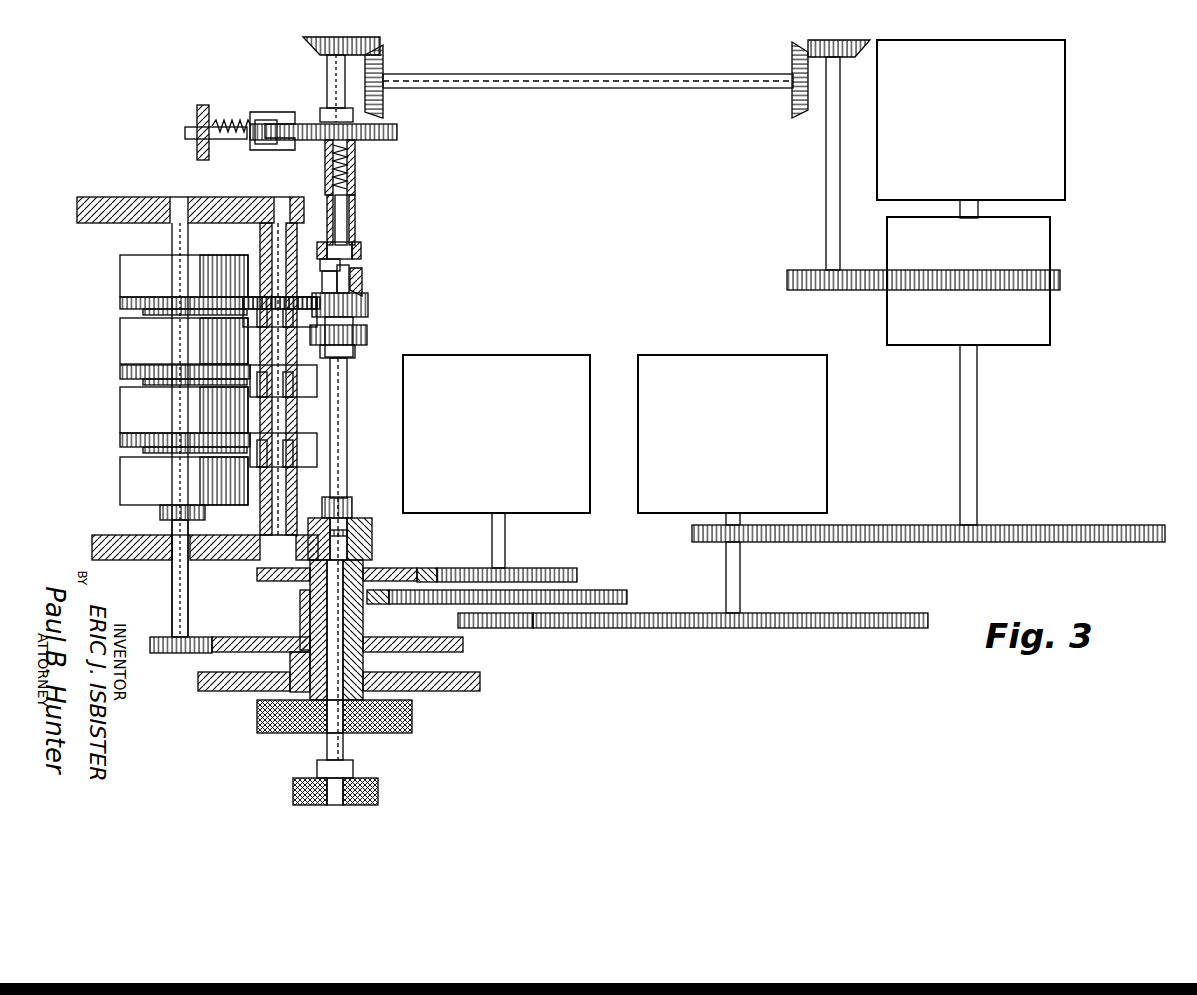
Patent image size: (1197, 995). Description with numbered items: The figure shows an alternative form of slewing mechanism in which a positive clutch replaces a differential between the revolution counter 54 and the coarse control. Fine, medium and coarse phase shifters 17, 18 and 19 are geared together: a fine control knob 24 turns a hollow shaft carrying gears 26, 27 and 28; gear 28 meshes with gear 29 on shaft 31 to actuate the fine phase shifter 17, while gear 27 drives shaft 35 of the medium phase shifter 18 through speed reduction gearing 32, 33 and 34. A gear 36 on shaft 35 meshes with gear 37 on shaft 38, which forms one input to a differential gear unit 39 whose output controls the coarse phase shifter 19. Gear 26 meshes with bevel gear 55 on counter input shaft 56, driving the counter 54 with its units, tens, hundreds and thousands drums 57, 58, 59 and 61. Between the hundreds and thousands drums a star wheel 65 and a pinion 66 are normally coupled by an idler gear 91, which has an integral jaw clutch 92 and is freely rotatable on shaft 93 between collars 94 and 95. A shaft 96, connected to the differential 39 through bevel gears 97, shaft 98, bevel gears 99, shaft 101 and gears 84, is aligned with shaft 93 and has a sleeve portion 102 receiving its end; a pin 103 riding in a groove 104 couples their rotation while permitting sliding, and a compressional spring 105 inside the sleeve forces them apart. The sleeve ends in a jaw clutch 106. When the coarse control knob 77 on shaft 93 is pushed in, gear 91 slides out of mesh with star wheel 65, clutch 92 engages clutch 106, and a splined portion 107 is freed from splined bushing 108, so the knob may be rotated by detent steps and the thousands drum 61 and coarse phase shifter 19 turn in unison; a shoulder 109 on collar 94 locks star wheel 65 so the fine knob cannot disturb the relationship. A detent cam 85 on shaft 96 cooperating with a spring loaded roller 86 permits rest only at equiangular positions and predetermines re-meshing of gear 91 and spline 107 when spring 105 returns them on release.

The fine phase shifter 17 is at (590, 468).
The medium phase shifter 18 is at (826, 468).
The coarse phase shifter 19 is at (1064, 160).
The fine control knob 24 is at (412, 722).
The gear 26 is at (262, 636).
The gear 27 is at (300, 610).
The gear 28 is at (399, 567).
The gear 29 is at (556, 568).
The shaft 31 is at (506, 542).
The speed reduction gear 32 is at (630, 590).
The speed reduction gear 33 is at (512, 628).
The speed reduction gear 34 is at (686, 628).
The shaft 35 is at (724, 578).
The gear 36 is at (746, 544).
The gear 37 is at (1140, 530).
The shaft 38 is at (978, 466).
The differential gear unit 39 is at (1050, 315).
The revolution counter 54 is at (92, 395).
The bevel gear 55 is at (155, 654).
The counter input shaft 56 is at (170, 590).
The units drum 57 is at (120, 489).
The tens drum 58 is at (120, 418).
The hundreds drum 59 is at (120, 341).
The thousands drum 61 is at (120, 275).
The star wheel 65 is at (300, 344).
The pinion 66 is at (300, 302).
The coarse control knob 77 is at (380, 790).
The bevel gears 84 is at (874, 290).
The detent cam 85 is at (398, 135).
The spring loaded roller 86 is at (278, 152).
The idler gear 91 is at (370, 306).
The jaw clutch 92 is at (365, 279).
The shaft 93 is at (346, 420).
The collar 94 is at (356, 352).
The collar 95 is at (361, 264).
The shaft 96 is at (326, 76).
The bevel gears 97 is at (384, 39).
The shaft 98 is at (612, 76).
The bevel gears 99 is at (792, 44).
The shaft 101 is at (826, 204).
The sleeve portion 102 is at (356, 174).
The pin 103 is at (354, 224).
The groove 104 is at (352, 207).
The compressional spring 105 is at (328, 174).
The jaw clutch 106 is at (361, 246).
The splined portion 107 is at (354, 500).
The splined bushing 108 is at (358, 518).
The shoulder 109 is at (368, 338).